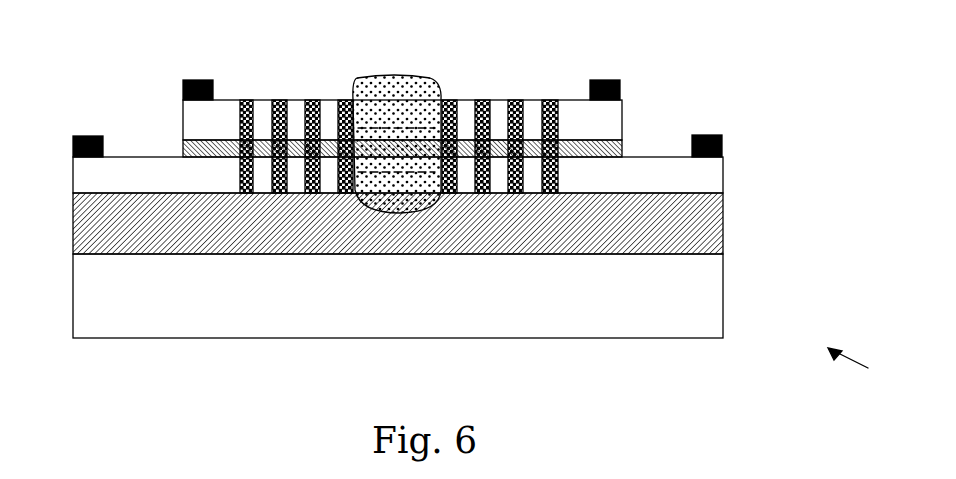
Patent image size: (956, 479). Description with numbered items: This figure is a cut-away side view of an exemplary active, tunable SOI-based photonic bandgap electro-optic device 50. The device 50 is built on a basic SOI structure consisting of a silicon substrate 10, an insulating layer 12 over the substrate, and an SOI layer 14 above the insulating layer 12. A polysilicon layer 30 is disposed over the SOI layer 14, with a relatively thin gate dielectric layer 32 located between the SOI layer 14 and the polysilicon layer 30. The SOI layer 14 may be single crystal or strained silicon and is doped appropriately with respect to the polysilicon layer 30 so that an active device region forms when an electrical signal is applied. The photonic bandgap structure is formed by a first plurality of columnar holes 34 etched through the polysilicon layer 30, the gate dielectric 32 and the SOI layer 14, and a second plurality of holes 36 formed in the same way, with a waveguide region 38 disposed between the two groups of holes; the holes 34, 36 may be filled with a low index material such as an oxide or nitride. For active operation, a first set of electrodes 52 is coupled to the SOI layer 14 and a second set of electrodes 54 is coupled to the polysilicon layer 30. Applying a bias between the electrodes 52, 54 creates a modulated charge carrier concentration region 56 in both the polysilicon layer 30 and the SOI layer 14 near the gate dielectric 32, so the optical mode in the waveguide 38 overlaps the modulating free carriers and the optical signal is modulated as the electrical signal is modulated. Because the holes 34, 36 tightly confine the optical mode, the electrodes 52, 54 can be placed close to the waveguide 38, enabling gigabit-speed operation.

The silicon substrate 10 is at (707, 295).
The insulating layer 12 is at (702, 228).
The SOI layer 14 is at (703, 175).
The polysilicon layer 30 is at (617, 117).
The gate dielectric layer 32 is at (623, 139).
The first plurality of columnar holes 34 is at (343, 89).
The second plurality of holes 36 is at (540, 89).
The waveguide region 38 is at (385, 90).
The SOI-based PBG electro-optic device 50 is at (910, 385).
The first set of electrodes 52 is at (72, 140).
The second set of electrodes 54 is at (193, 80).
The modulated charge carrier concentration region 56 is at (398, 123).